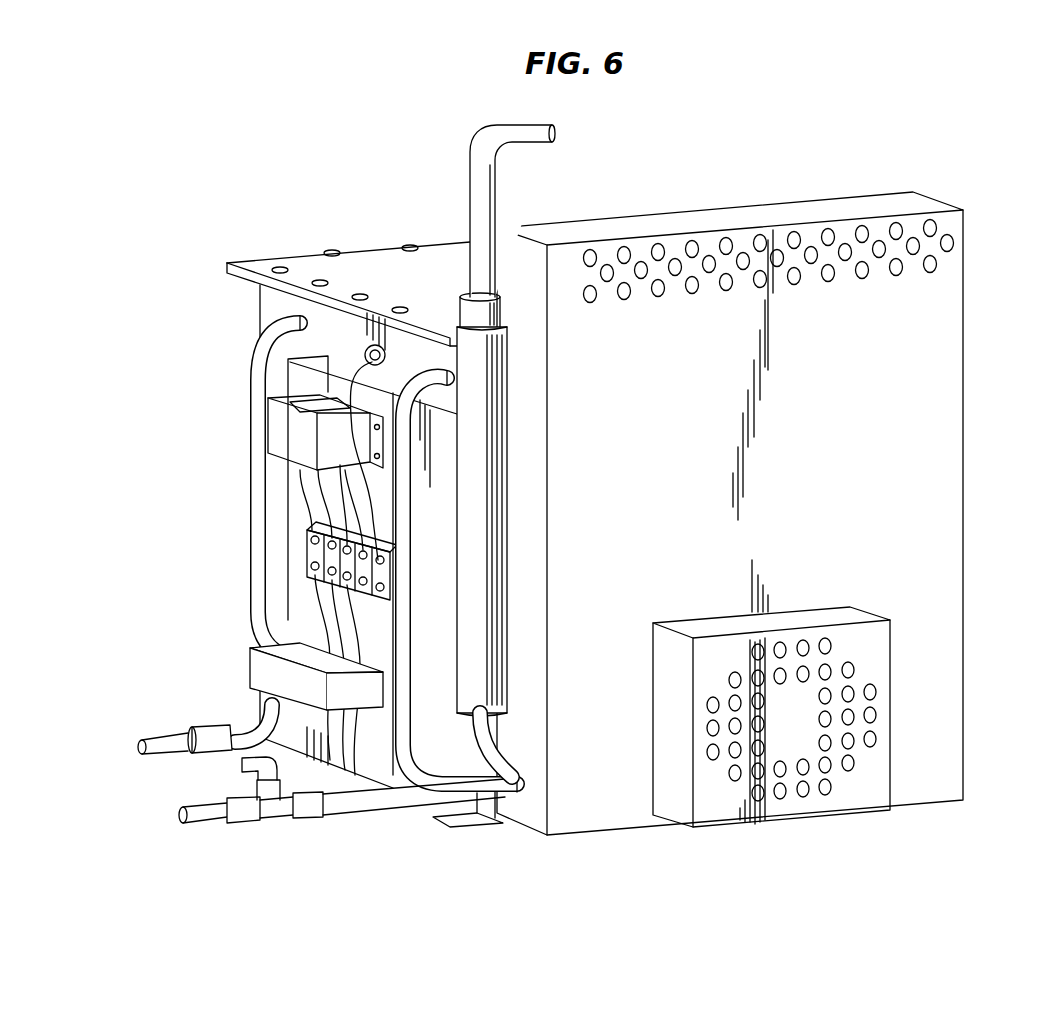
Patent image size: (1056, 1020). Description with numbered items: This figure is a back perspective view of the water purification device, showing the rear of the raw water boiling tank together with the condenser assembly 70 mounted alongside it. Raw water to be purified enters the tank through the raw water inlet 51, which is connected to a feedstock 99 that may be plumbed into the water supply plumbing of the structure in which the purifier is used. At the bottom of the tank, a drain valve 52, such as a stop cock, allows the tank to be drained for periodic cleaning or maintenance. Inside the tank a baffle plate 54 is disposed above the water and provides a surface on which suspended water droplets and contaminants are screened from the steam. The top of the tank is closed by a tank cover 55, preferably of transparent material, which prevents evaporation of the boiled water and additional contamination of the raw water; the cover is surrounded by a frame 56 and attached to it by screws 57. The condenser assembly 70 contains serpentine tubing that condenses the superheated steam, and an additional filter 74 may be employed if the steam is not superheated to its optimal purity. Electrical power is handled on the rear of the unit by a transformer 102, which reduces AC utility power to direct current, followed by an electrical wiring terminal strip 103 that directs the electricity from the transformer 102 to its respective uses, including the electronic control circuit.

The raw water inlet 51 is at (297, 320).
The drain valve 52 is at (277, 812).
The baffle plate 54 is at (268, 682).
The tank cover 55 is at (350, 268).
The frame 56 is at (282, 266).
The screws 57 is at (408, 246).
The condenser assembly 70 is at (843, 426).
The filter 74 is at (475, 628).
The feedstock 99 is at (140, 742).
The transformer 102 is at (290, 438).
The electrical wiring terminal strip 103 is at (305, 553).